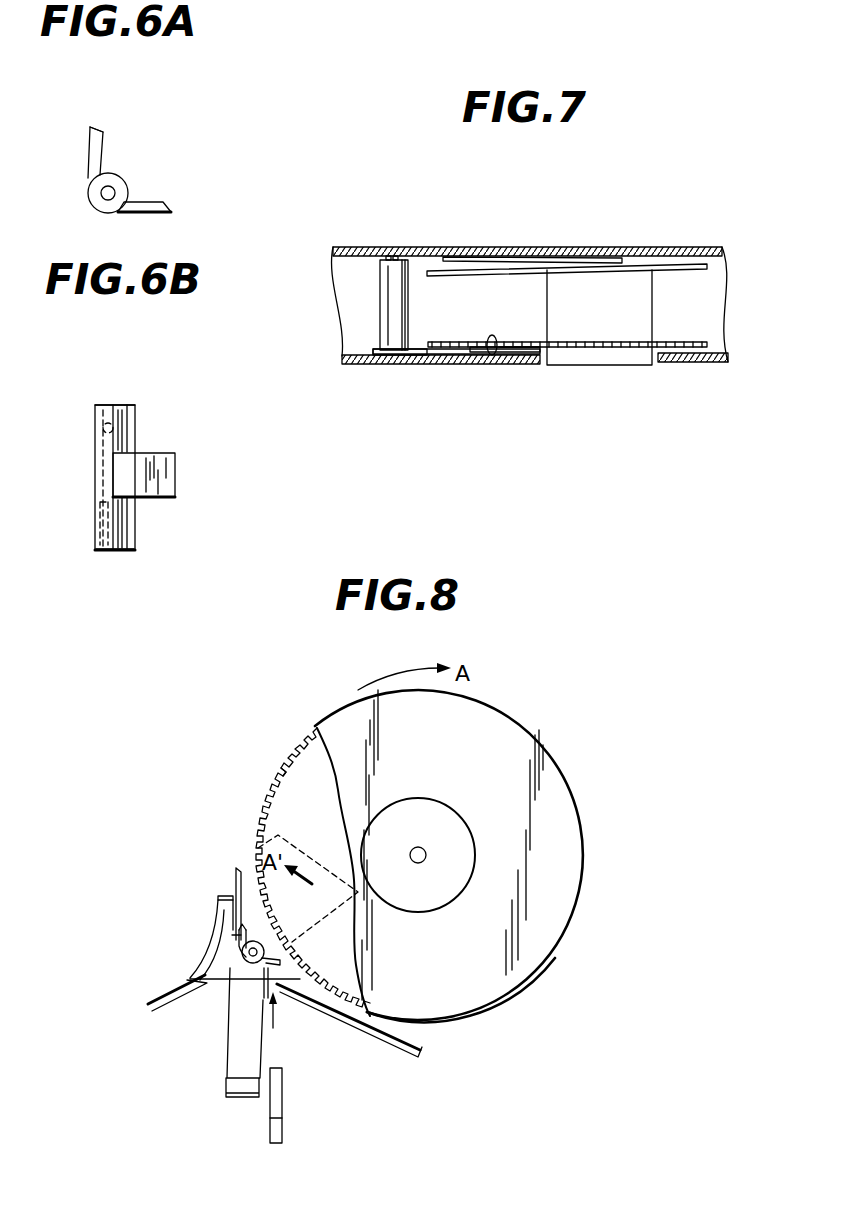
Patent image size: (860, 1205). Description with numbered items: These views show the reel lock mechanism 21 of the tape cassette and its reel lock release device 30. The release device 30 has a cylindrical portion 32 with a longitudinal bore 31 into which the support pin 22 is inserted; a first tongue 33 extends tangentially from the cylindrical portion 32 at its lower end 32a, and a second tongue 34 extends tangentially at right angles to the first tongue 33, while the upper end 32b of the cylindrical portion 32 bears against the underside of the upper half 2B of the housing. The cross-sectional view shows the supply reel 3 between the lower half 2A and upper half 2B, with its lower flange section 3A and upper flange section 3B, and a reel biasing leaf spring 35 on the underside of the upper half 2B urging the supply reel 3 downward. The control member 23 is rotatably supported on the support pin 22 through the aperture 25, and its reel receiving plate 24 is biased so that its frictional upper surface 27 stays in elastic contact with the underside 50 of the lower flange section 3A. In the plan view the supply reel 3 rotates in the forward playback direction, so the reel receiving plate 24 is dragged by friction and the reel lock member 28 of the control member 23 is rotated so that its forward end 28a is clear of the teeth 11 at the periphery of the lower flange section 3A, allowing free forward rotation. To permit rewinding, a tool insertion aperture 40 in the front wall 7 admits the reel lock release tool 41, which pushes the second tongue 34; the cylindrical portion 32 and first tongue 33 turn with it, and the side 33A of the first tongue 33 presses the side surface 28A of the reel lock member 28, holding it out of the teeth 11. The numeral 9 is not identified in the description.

In FIG. 7, the lower half of cassette housing 2A is at (372, 362).
In FIG. 7, the upper half of cassette housing 2B is at (365, 247).
In FIG. 8, the supply reel 3 is at (492, 752).
In FIG. 7, the lower reel flange section 3A is at (452, 342).
In FIG. 8, the lower reel flange section 3A is at (310, 755).
In FIG. 7, the upper flange section 3B is at (468, 270).
In FIG. 8, the upper flange section 3B is at (545, 935).
In FIG. 8, the front wall 7 is at (413, 1048).
In FIG. 8, the lever 9 is at (245, 1060).
In FIG. 7, the teeth 11 is at (603, 352).
In FIG. 8, the teeth 11 is at (282, 770).
In FIG. 8, the reel lock mechanism 21 is at (200, 919).
In FIG. 7, the support pin 22 is at (395, 256).
In FIG. 8, the support pin 22 is at (280, 990).
In FIG. 7, the control member 23 is at (450, 358).
In FIG. 8, the control member 23 is at (246, 868).
In FIG. 7, the reel receiving plate 24 is at (478, 352).
In FIG. 8, the reel receiving plate 24 is at (305, 862).
In FIG. 7, the aperture 25 is at (398, 355).
In FIG. 7, the upper surface of reel receiving member 27 is at (502, 353).
In FIG. 8, the reel lock member 28 is at (232, 895).
In FIG. 8, the forward end of reel lock member 28a is at (235, 897).
In FIG. 8, the side surface of reel lock member 28A is at (240, 932).
In FIG. 6A, the reel lock release device 30 is at (76, 140).
In FIG. 6B, the reel lock release device 30 is at (96, 395).
In FIG. 7, the reel lock release device 30 is at (366, 300).
In FIG. 8, the reel lock release device 30 is at (236, 962).
In FIG. 6A, the longitudinal bore 31 is at (112, 190).
In FIG. 6B, the longitudinal bore 31 is at (104, 424).
In FIG. 6B, the cylindrical portion 32 is at (97, 462).
In FIG. 7, the cylindrical portion 32 is at (382, 272).
In FIG. 6B, the lower end of cylindrical portion 32a is at (113, 548).
In FIG. 6B, the upper end of cylindrical portion 32b is at (100, 405).
In FIG. 6A, the first tongue 33 is at (92, 163).
In FIG. 6B, the first tongue 33 is at (97, 518).
In FIG. 8, the first tongue 33 is at (240, 950).
In FIG. 6A, the side of first tongue 33A is at (92, 130).
In FIG. 8, the side of first tongue 33A is at (240, 926).
In FIG. 6A, the second tongue 34 is at (150, 207).
In FIG. 6B, the second tongue 34 is at (160, 470).
In FIG. 8, the second tongue 34 is at (268, 950).
In FIG. 7, the reel biasing leaf spring 35 is at (572, 258).
In FIG. 8, the tool insertion aperture 40 is at (278, 1003).
In FIG. 8, the reel lock release tool 41 is at (283, 1112).
In FIG. 7, the underside of lower flange section 50 is at (500, 340).